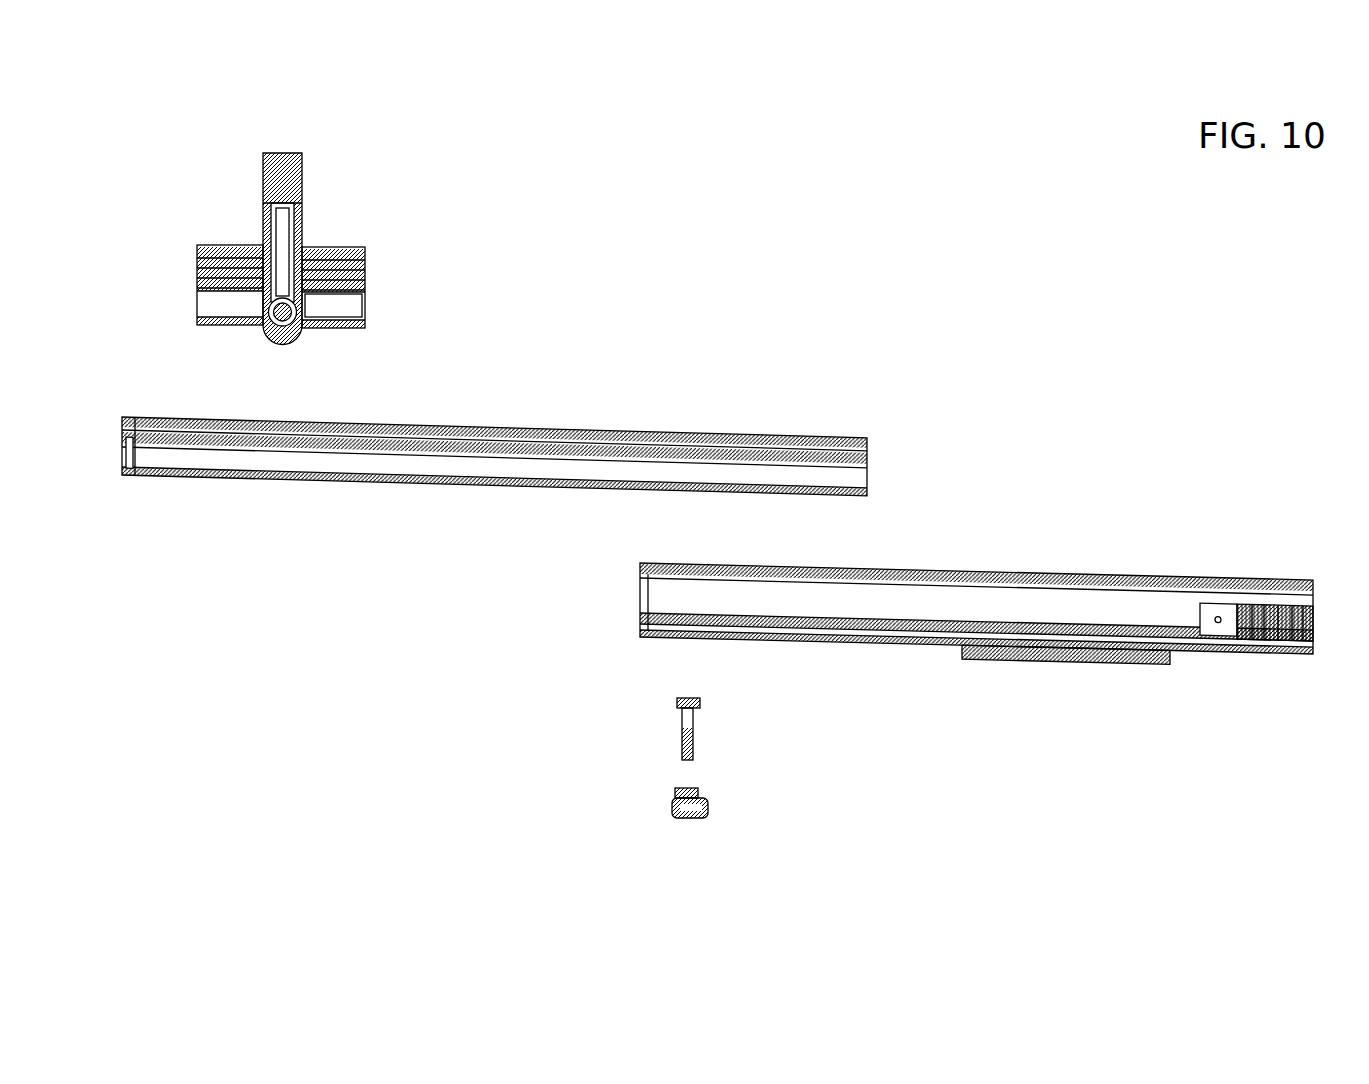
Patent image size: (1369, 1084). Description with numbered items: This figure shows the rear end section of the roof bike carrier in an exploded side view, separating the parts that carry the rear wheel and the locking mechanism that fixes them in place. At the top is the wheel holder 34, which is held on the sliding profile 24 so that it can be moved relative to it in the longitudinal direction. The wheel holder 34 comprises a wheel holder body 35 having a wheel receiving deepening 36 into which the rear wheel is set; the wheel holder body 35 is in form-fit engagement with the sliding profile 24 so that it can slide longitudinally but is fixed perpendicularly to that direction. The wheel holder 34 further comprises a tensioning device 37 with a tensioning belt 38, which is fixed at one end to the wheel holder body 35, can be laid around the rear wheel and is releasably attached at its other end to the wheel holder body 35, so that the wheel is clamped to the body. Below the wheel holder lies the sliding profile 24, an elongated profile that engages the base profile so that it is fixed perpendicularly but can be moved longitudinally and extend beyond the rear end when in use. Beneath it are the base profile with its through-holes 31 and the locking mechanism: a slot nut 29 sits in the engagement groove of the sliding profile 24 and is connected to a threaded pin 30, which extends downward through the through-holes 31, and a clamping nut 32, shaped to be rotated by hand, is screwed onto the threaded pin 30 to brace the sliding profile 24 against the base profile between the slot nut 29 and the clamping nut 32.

The sliding profile 24 is at (735, 455).
The slot nut 29 is at (680, 752).
The threaded pin 30 is at (697, 738).
The through-hole 31 is at (922, 665).
The clamping nut 32 is at (690, 822).
The wheel holder 34 is at (390, 294).
The wheel holder body 35 is at (365, 280).
The wheel receiving deepening 36 is at (321, 226).
The tensioning device 37 is at (247, 230).
The tensioning belt 38 is at (282, 248).